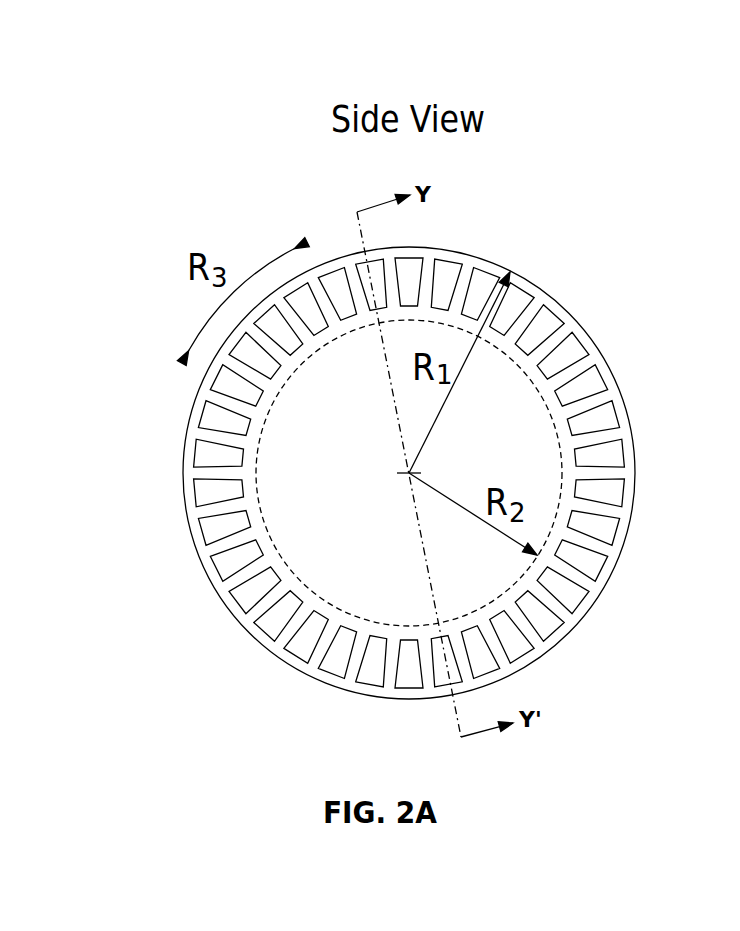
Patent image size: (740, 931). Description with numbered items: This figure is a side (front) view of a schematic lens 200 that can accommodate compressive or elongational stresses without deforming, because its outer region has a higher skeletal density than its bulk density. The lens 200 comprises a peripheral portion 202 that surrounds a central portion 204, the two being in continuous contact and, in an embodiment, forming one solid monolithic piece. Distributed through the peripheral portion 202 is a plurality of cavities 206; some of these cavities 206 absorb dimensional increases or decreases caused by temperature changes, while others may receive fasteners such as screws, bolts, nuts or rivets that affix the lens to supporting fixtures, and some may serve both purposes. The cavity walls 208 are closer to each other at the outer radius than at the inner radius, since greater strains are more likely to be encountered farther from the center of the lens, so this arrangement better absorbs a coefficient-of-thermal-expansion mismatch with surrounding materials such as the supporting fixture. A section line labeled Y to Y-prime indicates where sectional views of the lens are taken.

The lens 200 is at (610, 227).
The peripheral portion 202 is at (597, 348).
The central portion 204 is at (513, 588).
The cavities 206 is at (607, 413).
The cavity walls 208 is at (212, 396).